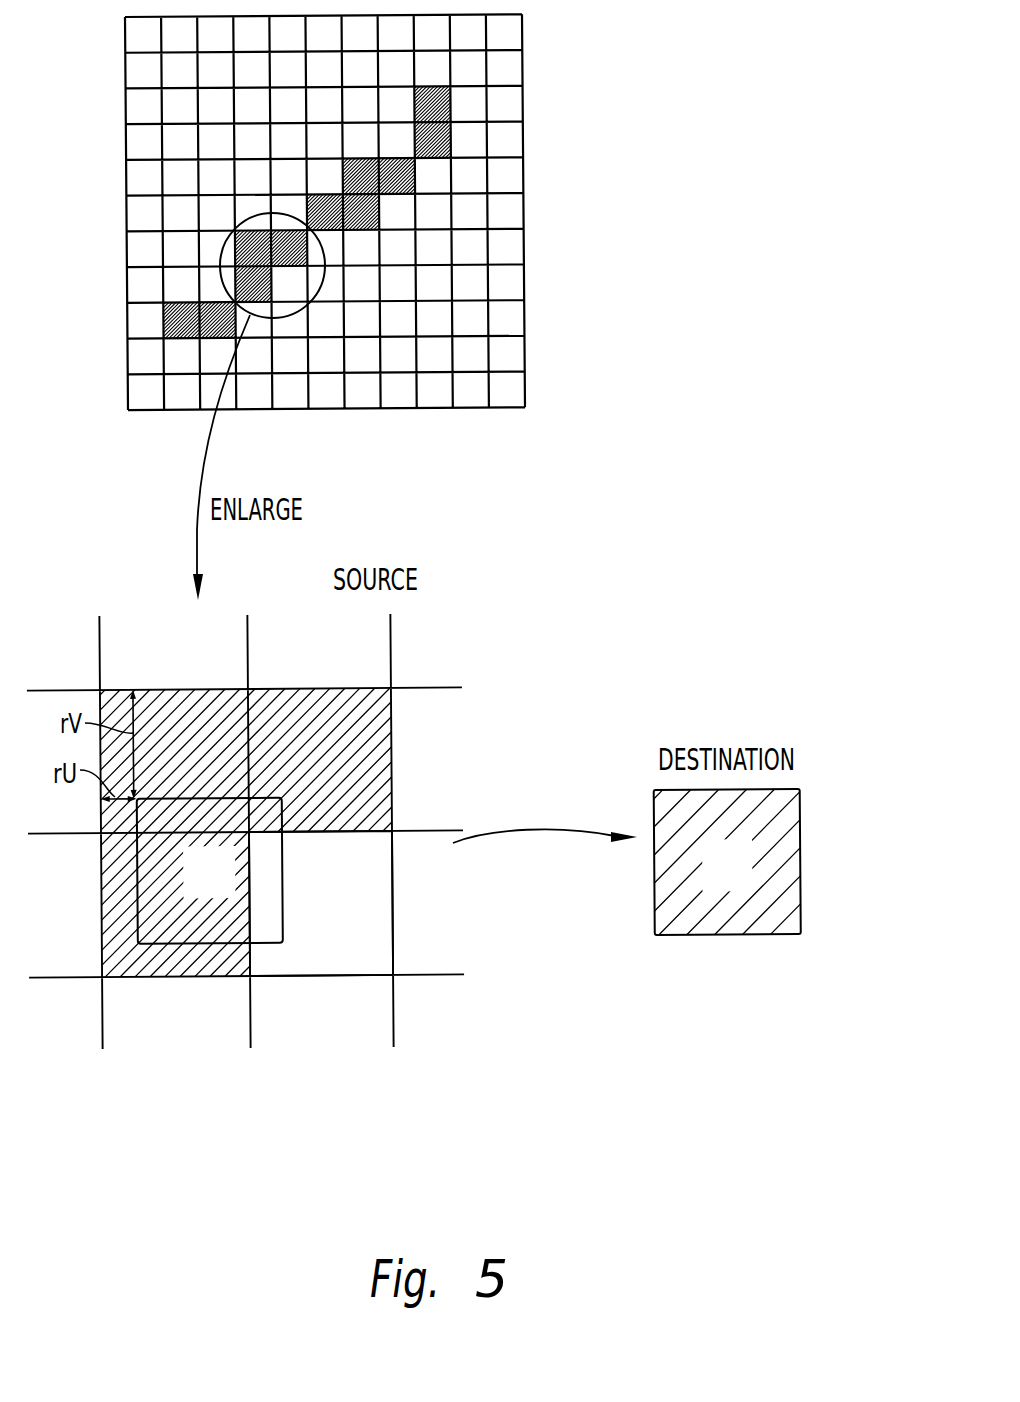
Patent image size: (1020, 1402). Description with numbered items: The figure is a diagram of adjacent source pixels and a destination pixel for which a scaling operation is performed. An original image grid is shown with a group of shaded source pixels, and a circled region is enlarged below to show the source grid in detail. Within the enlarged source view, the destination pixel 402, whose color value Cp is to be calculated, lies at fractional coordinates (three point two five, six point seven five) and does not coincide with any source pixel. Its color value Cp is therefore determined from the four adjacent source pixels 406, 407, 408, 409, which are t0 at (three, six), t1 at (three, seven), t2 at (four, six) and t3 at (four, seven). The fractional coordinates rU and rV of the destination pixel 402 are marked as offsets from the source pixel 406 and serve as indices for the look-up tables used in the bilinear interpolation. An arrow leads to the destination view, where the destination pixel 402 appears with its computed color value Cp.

The destination pixel 402 is at (282, 893).
The source pixel 406 is at (193, 688).
The source pixel 407 is at (173, 977).
The source pixel 408 is at (343, 688).
The source pixel 409 is at (320, 977).